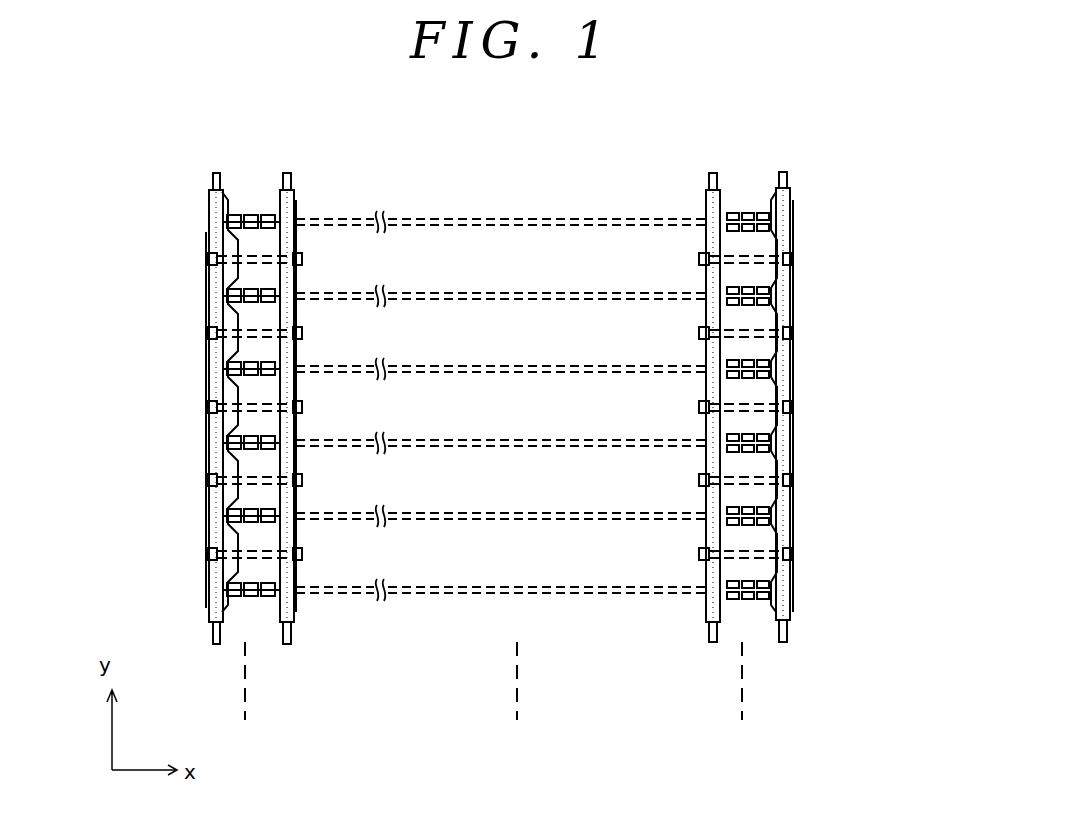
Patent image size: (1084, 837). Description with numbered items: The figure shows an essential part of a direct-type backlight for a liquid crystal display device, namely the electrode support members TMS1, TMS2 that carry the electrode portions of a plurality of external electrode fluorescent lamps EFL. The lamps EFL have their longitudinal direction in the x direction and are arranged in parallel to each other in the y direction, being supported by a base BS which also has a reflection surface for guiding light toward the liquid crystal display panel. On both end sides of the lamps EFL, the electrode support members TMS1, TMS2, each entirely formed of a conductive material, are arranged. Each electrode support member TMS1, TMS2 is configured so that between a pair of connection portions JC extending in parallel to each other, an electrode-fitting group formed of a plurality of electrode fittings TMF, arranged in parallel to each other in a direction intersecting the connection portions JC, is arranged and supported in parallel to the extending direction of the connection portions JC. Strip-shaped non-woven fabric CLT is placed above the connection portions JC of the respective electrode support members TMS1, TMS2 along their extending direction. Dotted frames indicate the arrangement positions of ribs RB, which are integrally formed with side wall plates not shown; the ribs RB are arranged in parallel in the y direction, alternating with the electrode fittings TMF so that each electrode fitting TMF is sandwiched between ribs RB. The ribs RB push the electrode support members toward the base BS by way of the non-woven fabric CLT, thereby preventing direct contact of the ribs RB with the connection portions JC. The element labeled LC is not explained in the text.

The electrode fitting TMF is at (733, 211).
The external electrode fluorescent lamp EFL is at (476, 296).
The rib RB is at (253, 258).
The electrode support member TMS1 is at (208, 462).
The electrode support member TMS2 is at (800, 422).
The lead connection LC is at (213, 603).
The connection portion JC is at (300, 607).
The non-woven fabric CLT is at (218, 648).
The base BS is at (437, 625).